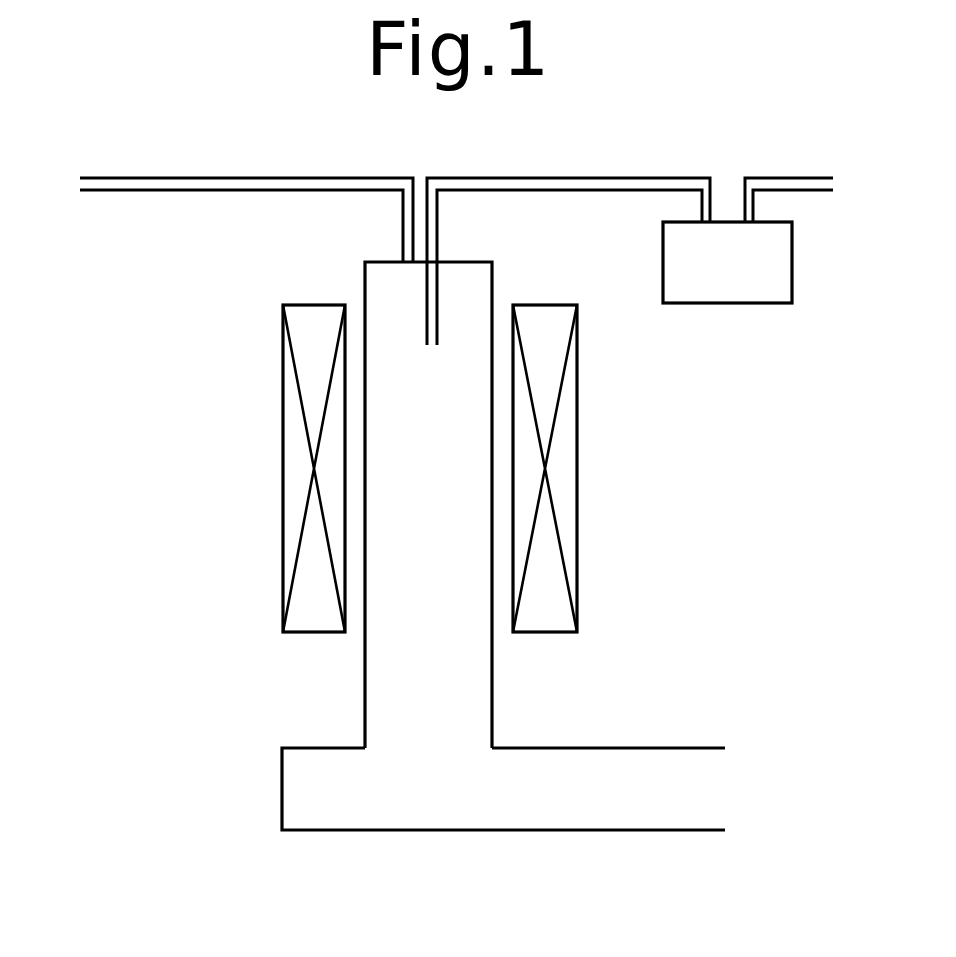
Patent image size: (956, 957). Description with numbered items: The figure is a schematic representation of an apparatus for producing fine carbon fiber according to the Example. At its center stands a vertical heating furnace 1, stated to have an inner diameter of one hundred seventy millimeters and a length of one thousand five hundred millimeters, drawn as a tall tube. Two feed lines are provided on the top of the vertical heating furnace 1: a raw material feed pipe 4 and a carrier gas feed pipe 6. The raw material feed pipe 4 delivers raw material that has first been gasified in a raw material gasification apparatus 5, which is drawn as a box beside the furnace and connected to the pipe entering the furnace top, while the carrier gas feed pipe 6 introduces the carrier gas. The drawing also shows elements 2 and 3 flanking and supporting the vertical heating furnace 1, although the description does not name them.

The vertical heating furnace 1 is at (377, 293).
The induction coil 2 is at (292, 460).
The base plate 3 is at (553, 814).
The raw material feed pipe 4 is at (805, 183).
The raw material gasification apparatus 5 is at (764, 291).
The carrier gas feed pipe 6 is at (231, 205).